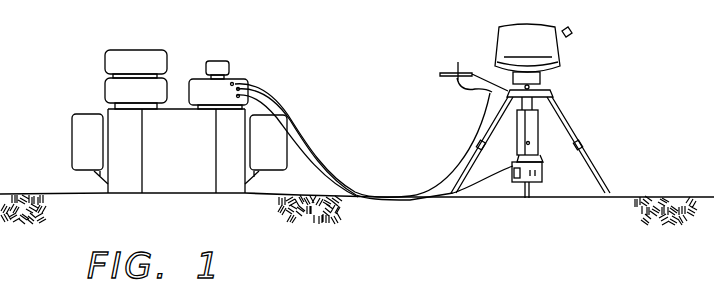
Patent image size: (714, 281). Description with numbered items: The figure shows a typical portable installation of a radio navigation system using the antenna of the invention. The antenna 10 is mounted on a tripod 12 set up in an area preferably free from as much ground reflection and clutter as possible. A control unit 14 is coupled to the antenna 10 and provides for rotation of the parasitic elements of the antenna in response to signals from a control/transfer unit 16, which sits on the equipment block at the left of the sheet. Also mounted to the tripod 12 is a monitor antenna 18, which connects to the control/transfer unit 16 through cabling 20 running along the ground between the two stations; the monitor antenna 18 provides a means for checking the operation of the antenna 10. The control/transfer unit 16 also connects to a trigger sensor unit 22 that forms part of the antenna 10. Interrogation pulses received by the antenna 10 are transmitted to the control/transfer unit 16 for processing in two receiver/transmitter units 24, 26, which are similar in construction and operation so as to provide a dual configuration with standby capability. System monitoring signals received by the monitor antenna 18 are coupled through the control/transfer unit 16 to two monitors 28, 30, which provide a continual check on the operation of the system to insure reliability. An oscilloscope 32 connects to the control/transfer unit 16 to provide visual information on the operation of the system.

The antenna 10 is at (572, 32).
The tripod 12 is at (566, 121).
The control unit 14 is at (504, 109).
The control/transfer unit 16 is at (198, 84).
The monitor antenna 18 is at (457, 62).
The cabling 20 is at (470, 146).
The trigger sensor unit 22 is at (542, 78).
The receiver/transmitter unit 24 is at (118, 60).
The receiver/transmitter unit 26 is at (117, 91).
The monitor 28 is at (79, 138).
The monitor 30 is at (270, 165).
The oscilloscope 32 is at (226, 62).